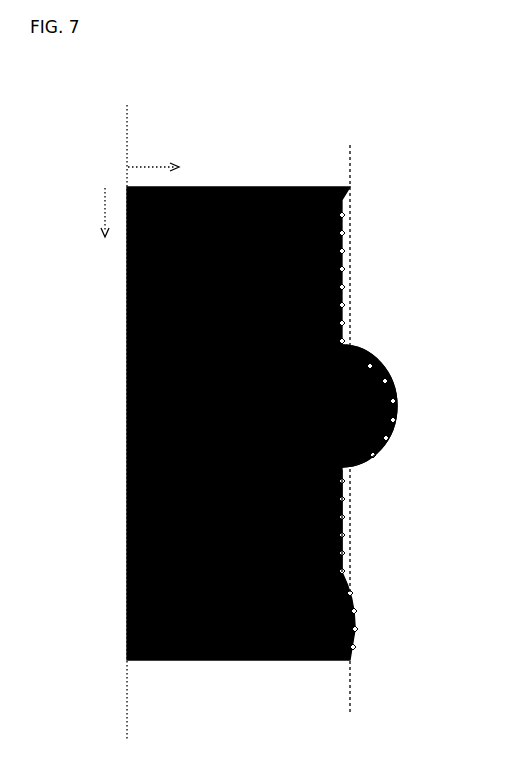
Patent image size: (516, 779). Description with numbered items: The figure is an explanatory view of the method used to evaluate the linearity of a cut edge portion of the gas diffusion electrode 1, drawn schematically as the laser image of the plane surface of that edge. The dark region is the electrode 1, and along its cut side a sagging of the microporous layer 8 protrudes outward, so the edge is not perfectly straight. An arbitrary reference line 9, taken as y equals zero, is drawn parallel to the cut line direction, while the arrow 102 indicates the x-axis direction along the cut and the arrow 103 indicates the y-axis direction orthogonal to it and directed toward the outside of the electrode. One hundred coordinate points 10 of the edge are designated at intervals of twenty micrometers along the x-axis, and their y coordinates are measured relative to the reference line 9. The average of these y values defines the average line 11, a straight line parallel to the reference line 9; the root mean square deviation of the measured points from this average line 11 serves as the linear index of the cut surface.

The gas diffusion electrode 1 is at (243, 208).
The sagging of microporous layer 8 is at (365, 423).
The reference line 9 is at (128, 680).
The coordinate point of edge portion of gas diffusion electrode 10 is at (341, 525).
The average line 11 is at (351, 700).
The arrow indicating x-axis direction 102 is at (103, 207).
The arrow indicating Y-axis direction 103 is at (150, 162).